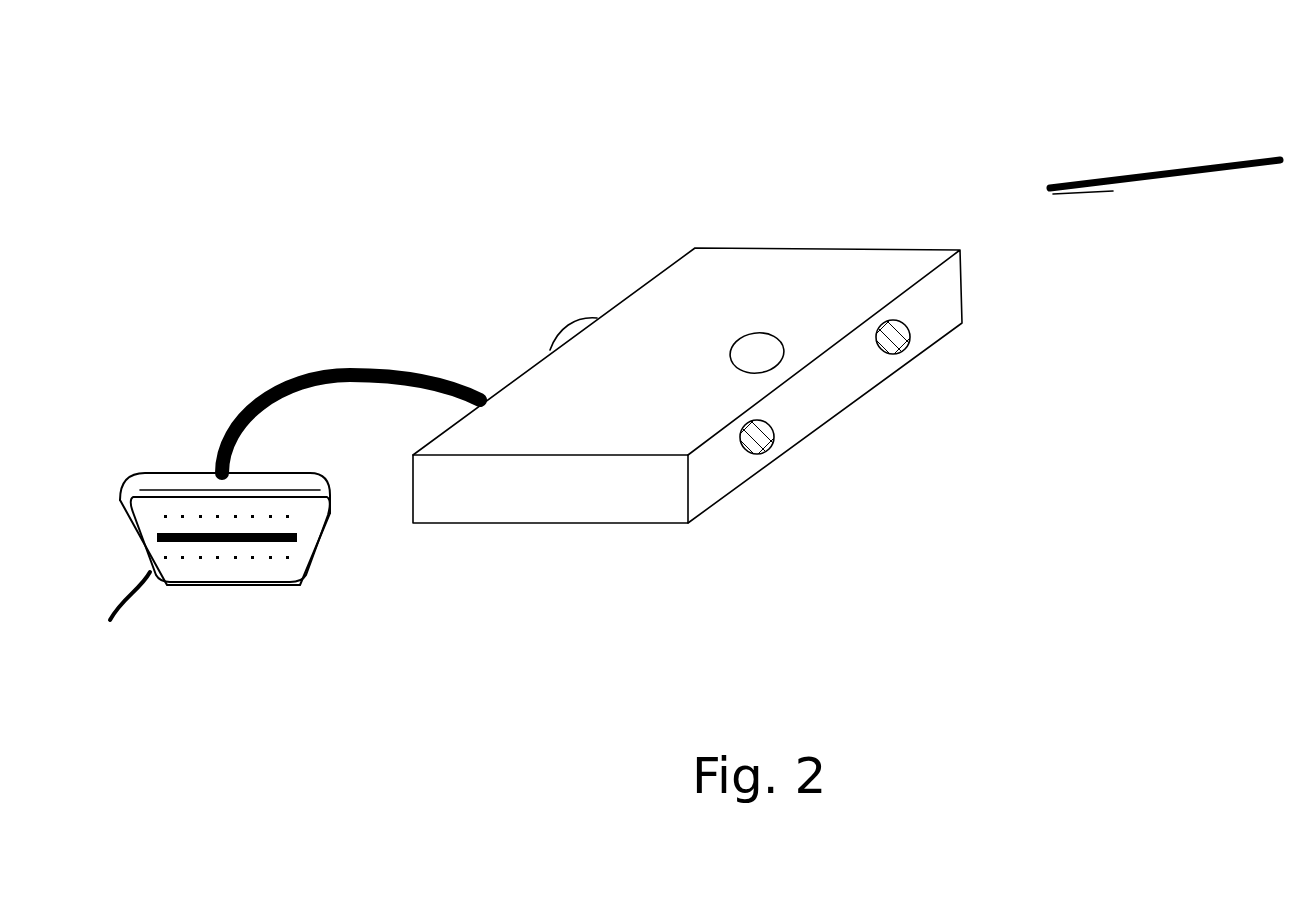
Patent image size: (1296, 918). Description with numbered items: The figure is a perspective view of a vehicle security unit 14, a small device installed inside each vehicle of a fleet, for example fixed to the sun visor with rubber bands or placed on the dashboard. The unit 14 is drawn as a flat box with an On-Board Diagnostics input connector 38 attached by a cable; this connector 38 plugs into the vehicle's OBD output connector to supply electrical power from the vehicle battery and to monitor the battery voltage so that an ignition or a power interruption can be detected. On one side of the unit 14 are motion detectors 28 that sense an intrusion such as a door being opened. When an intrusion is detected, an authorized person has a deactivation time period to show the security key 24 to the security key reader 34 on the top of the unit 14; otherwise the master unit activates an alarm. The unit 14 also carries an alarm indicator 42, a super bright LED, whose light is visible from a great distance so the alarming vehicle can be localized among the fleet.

The vehicle security unit 14 is at (807, 247).
The alarm indicator 42 is at (560, 328).
The security key reader 34 is at (733, 343).
The motion detectors 28 is at (772, 448).
The security key 24 is at (1193, 167).
The On-Board Diagnostics input connector 38 is at (263, 510).